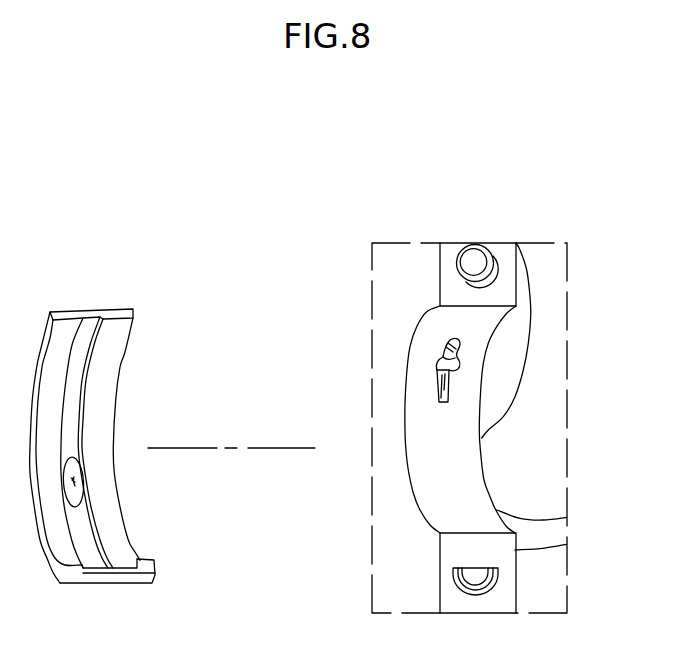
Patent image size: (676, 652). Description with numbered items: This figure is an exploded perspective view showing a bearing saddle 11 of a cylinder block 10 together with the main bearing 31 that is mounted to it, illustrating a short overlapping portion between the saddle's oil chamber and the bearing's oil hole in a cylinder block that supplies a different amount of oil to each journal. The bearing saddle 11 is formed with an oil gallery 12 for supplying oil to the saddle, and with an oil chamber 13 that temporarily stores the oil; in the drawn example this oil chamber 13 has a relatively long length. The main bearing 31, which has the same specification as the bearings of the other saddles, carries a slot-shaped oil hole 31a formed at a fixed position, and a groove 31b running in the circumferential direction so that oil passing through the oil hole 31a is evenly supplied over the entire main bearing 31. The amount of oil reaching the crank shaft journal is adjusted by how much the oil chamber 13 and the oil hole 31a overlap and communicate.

The cylinder block 10 is at (422, 373).
The bearing saddle 11 is at (432, 467).
The oil gallery 12 is at (433, 353).
The oil chamber 13 is at (445, 382).
The main bearing 31 is at (133, 446).
The oil hole 31a is at (77, 482).
The groove 31b is at (67, 422).